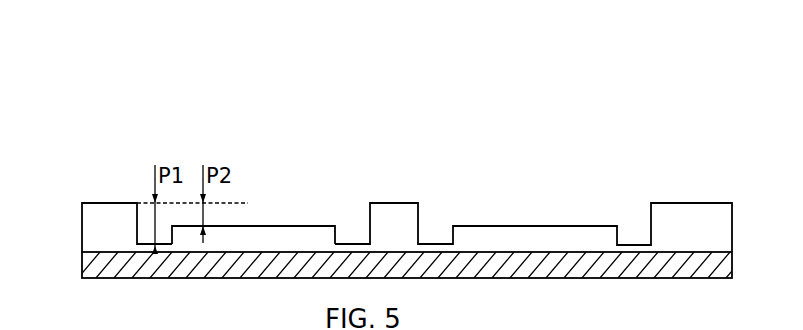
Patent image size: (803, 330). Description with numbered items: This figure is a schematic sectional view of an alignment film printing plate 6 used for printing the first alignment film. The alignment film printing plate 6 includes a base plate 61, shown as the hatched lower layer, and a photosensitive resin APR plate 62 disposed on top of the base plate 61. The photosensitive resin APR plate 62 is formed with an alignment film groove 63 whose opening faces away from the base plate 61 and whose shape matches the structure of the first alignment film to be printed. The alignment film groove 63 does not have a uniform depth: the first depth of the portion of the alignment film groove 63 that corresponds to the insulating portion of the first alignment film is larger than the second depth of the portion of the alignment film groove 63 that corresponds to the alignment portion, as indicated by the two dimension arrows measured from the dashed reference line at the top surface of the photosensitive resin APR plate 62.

The alignment film printing plate 6 is at (80, 199).
The base plate 61 is at (98, 261).
The photosensitive resin APR plate 62 is at (92, 226).
The alignment film groove 63 is at (280, 220).